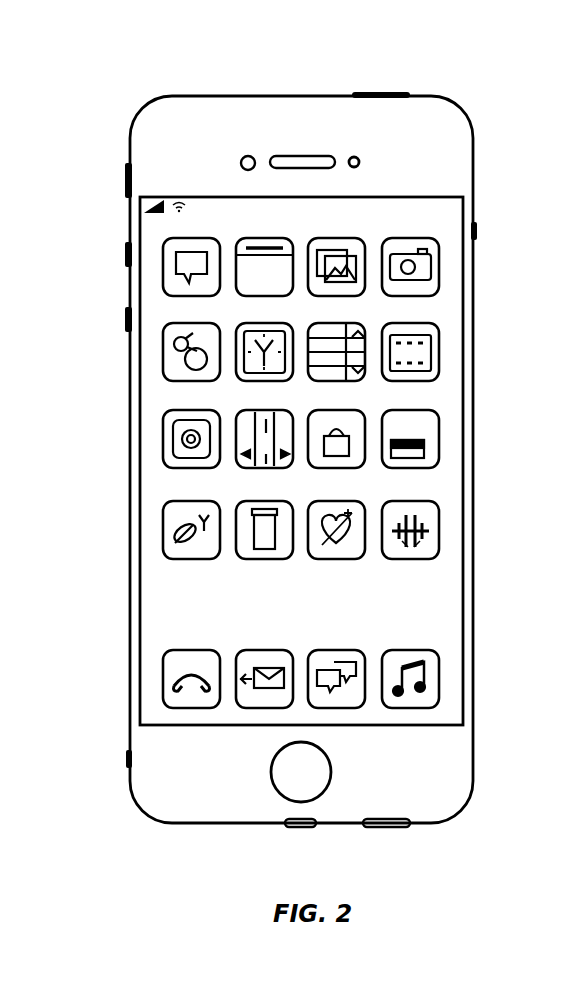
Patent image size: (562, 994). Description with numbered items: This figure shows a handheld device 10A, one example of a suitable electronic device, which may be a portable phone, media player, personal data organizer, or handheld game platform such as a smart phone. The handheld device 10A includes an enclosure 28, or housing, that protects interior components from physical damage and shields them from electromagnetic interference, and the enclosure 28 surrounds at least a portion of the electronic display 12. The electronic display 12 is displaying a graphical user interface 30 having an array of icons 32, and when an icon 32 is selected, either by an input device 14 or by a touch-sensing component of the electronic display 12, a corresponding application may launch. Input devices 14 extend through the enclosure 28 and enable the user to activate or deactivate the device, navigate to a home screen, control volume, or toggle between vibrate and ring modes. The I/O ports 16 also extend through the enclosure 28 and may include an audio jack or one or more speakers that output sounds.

The handheld device 10A is at (133, 92).
The electronic display 12 is at (468, 499).
The input devices 14 is at (381, 93).
The I/O ports 16 is at (213, 826).
The enclosure 28 is at (475, 166).
The graphical user interface 30 is at (452, 397).
The icon 32 is at (336, 545).